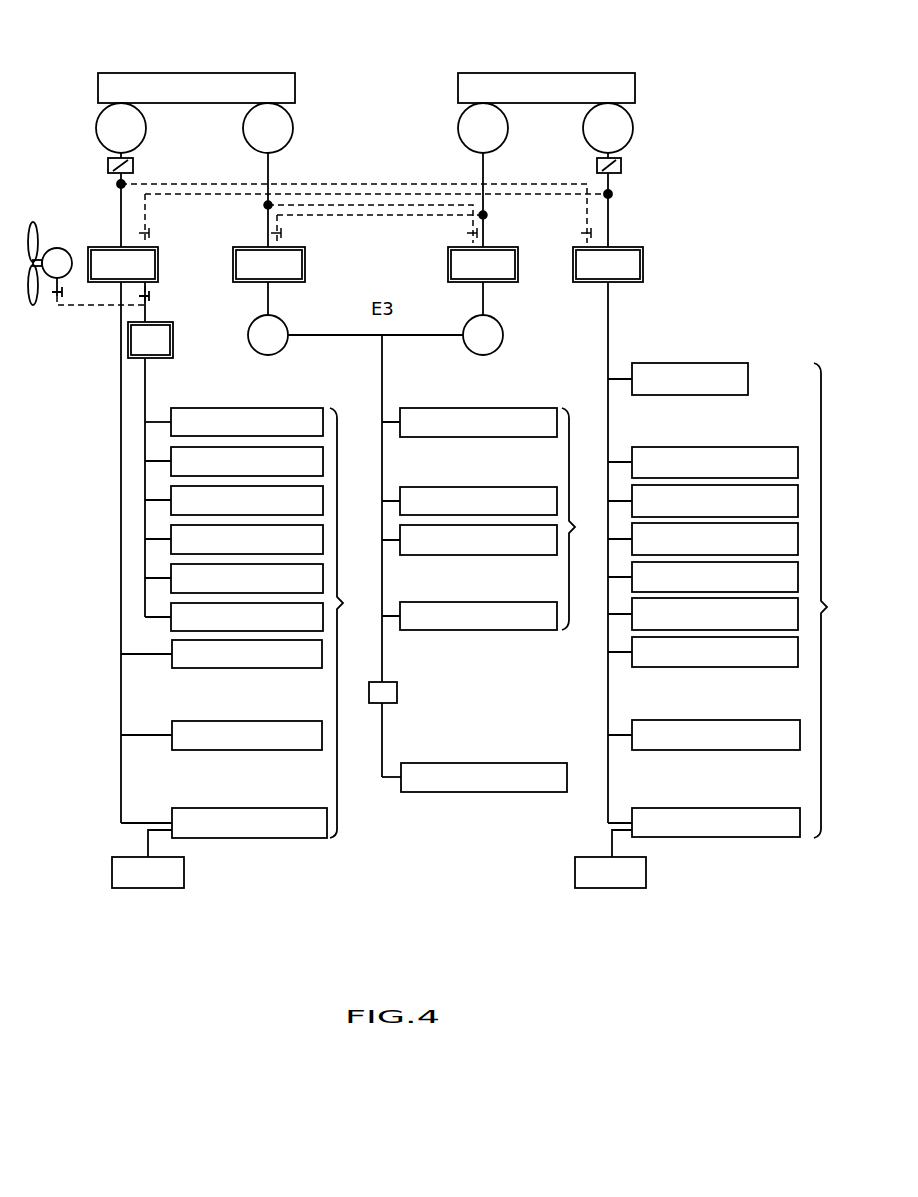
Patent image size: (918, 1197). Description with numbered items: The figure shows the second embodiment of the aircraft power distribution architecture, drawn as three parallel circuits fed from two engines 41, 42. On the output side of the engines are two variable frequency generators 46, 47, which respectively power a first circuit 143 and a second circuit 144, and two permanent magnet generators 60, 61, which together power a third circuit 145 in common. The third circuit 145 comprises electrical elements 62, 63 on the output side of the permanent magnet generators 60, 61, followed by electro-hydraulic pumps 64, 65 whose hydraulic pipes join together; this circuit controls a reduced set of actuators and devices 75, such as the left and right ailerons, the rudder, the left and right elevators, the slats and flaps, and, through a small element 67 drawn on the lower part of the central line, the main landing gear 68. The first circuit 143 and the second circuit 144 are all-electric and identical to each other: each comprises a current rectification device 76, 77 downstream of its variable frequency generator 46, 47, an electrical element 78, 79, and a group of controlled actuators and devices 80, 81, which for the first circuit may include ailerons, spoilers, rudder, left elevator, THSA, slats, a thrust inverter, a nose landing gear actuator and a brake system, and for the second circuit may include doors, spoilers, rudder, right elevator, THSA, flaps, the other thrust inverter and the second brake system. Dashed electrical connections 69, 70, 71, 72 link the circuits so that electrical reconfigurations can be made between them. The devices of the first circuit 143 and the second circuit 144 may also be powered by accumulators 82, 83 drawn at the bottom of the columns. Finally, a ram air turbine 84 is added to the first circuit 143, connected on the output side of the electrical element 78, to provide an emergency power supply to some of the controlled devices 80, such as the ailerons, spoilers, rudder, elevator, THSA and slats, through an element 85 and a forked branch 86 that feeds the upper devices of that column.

The engine 41 is at (210, 78).
The engine 42 is at (512, 78).
The variable frequency generator 46 is at (98, 130).
The variable frequency generator 47 is at (630, 128).
The permanent magnet generator 60 is at (291, 119).
The permanent magnet generator 61 is at (462, 130).
The electrical element 62 is at (306, 266).
The electrical element 63 is at (448, 262).
The electro-hydraulic pump 64 is at (255, 330).
The electro-hydraulic pump 65 is at (468, 325).
The contactor 67 is at (398, 695).
The main landing gear 68 is at (418, 792).
The electrical connection 69 is at (300, 184).
The electrical connection 70 is at (362, 194).
The electrical connection 71 is at (312, 205).
The electrical connection 72 is at (352, 215).
The actuators and devices 75 is at (492, 519).
The current rectification device 76 is at (134, 166).
The current rectification device 77 is at (622, 167).
The electrical element 78 is at (106, 250).
The electrical element 79 is at (644, 262).
The controlled actuators and devices 80 is at (245, 623).
The controlled actuators and devices 81 is at (731, 600).
The accumulator 82 is at (113, 868).
The accumulator 83 is at (575, 868).
The ram air turbine 84 is at (57, 248).
The element 85 is at (165, 345).
The forked branch 86 is at (145, 441).
The first circuit 143 is at (196, 897).
The second circuit 144 is at (677, 897).
The third circuit 145 is at (458, 895).